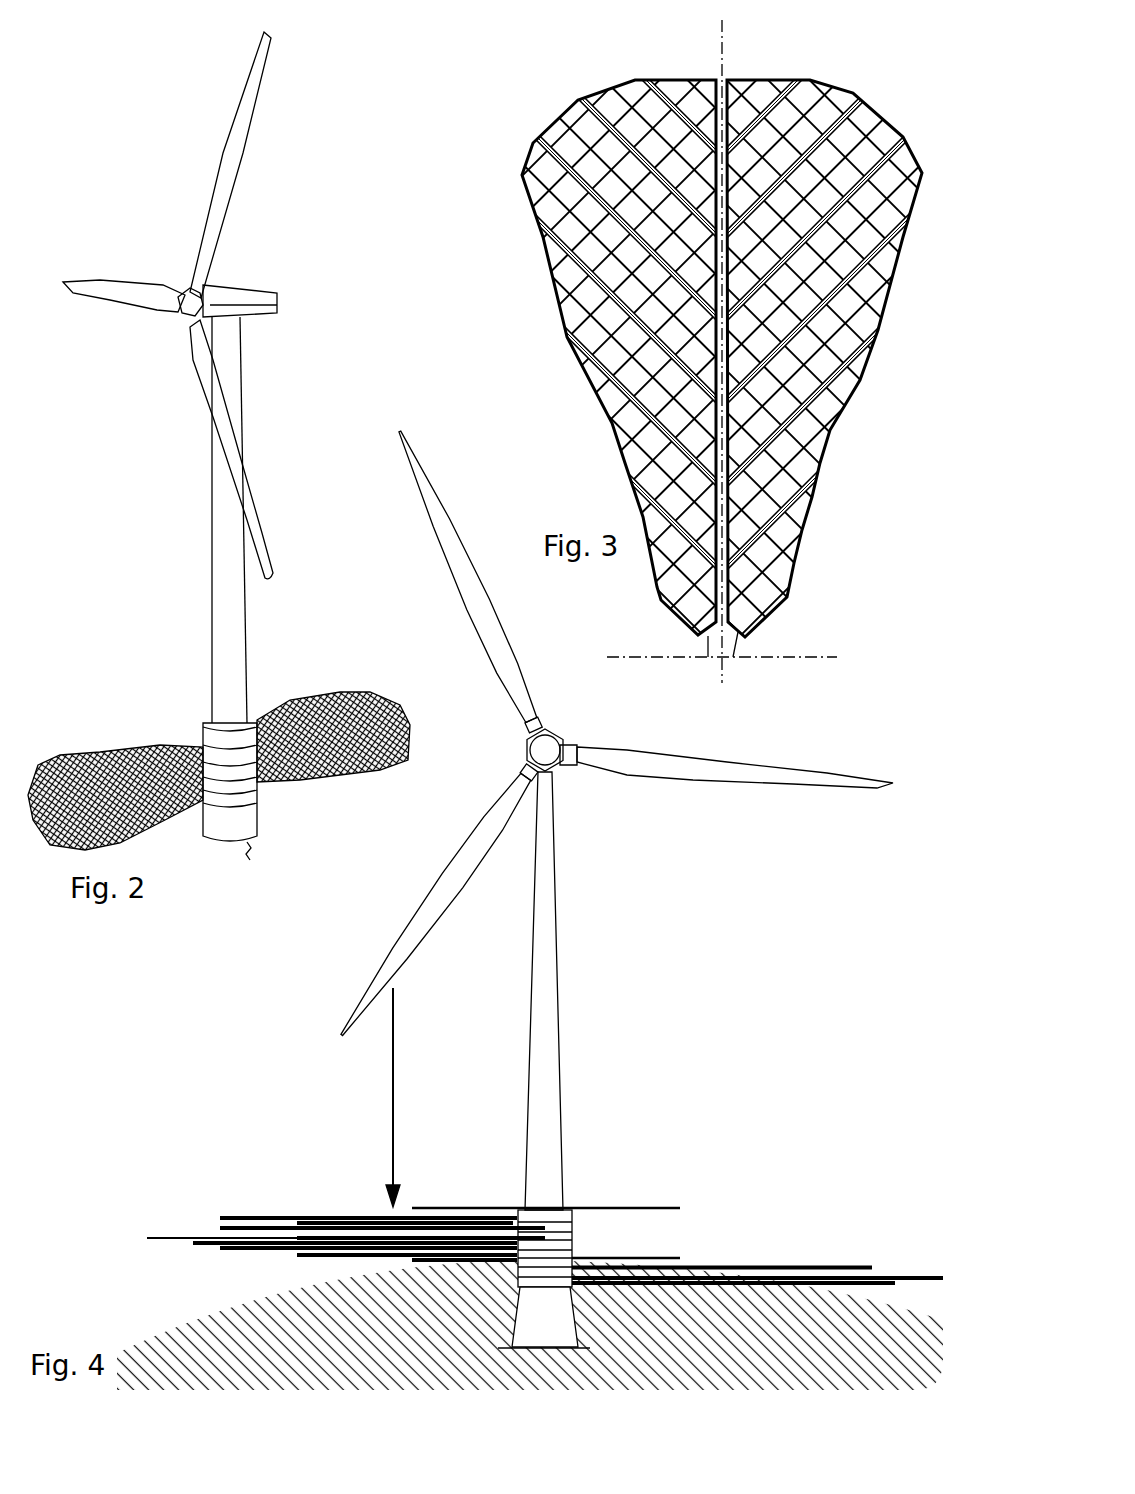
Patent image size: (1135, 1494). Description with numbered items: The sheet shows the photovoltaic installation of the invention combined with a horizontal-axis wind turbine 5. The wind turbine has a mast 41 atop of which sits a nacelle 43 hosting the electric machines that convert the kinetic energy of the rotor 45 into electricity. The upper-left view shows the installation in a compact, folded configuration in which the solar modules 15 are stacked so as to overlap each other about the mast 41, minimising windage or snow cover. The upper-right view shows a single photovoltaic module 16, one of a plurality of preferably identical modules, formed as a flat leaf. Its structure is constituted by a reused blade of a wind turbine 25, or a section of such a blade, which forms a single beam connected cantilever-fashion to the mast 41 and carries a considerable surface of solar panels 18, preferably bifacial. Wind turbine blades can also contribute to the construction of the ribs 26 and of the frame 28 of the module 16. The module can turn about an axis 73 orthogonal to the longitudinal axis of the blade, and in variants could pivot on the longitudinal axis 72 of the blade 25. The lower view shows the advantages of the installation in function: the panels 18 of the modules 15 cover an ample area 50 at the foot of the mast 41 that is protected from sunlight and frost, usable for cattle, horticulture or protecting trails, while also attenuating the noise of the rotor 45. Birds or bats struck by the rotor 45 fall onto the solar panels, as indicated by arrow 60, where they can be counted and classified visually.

In FIG. 2, the wind turbine 5 is at (213, 446).
In FIG. 2, the solar modules 15 is at (118, 708).
In FIG. 4, the solar modules 15 is at (762, 1200).
In FIG. 3, the module 16 is at (560, 412).
In FIG. 3, the solar panels 18 is at (785, 488).
In FIG. 4, the solar panels 18 is at (296, 1218).
In FIG. 3, the blade of a wind turbine 25 is at (740, 632).
In FIG. 3, the ribs 26 is at (558, 250).
In FIG. 3, the frame 28 is at (858, 387).
In FIG. 2, the mast 41 is at (246, 652).
In FIG. 4, the mast 41 is at (545, 973).
In FIG. 2, the nacelle 43 is at (263, 307).
In FIG. 2, the rotor 45 is at (220, 168).
In FIG. 4, the rotor 45 is at (787, 778).
In FIG. 4, the area 50 is at (157, 1327).
In FIG. 4, the arrow 60 is at (392, 1154).
In FIG. 3, the longitudinal axis 72 is at (722, 52).
In FIG. 3, the axis 73 is at (657, 657).